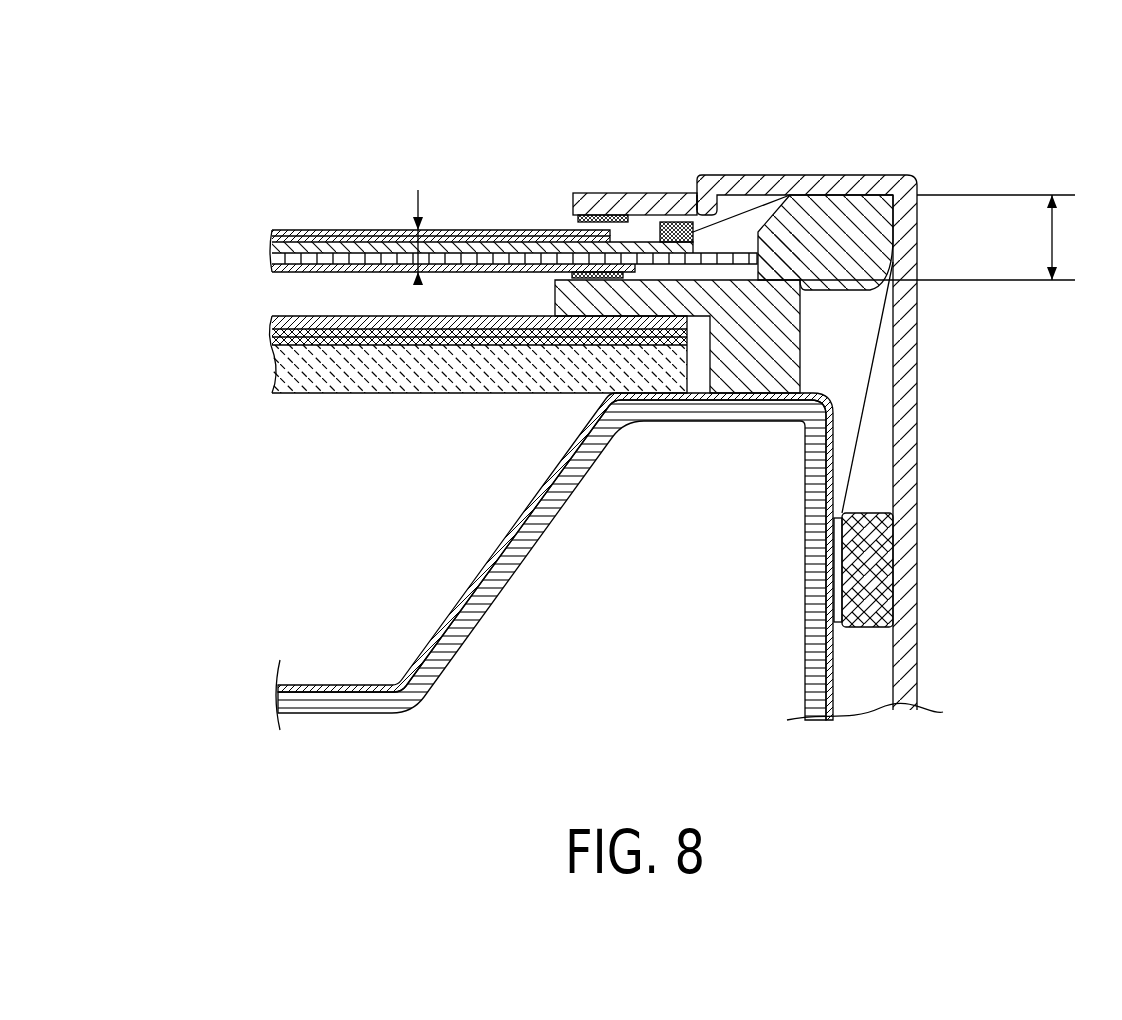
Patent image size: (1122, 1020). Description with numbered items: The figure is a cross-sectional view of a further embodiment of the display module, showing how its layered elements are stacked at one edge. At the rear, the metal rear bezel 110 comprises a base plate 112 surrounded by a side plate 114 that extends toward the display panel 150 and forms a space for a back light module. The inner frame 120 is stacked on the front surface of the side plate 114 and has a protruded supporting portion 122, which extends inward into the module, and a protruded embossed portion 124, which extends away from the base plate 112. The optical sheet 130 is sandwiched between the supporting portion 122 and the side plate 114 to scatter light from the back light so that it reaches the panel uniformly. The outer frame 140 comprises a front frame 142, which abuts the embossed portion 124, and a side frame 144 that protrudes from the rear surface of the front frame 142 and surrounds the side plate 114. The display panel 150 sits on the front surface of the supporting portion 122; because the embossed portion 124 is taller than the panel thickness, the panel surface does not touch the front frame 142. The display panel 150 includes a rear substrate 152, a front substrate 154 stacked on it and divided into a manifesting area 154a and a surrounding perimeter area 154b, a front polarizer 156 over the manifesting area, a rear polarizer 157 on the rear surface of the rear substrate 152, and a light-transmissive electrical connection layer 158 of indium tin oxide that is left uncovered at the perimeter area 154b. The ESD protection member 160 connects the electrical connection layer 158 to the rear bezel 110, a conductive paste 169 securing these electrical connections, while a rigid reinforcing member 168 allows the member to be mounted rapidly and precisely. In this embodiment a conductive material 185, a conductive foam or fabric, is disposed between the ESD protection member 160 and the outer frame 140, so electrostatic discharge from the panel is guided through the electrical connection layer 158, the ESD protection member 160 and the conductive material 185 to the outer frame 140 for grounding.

The rear bezel 110 is at (428, 632).
The base plate 112 is at (343, 703).
The side plate 114 is at (462, 628).
The inner frame 120 is at (789, 196).
The supporting portion 122 is at (638, 297).
The embossed portion 124 is at (795, 252).
The optical sheet 130 is at (262, 368).
The outer frame 140 is at (967, 84).
The front frame 142 is at (829, 228).
The side frame 144 is at (893, 262).
The display panel 150 is at (166, 85).
The rear substrate 152 is at (297, 262).
The front substrate 154 is at (317, 250).
The manifesting area 154a is at (476, 240).
The perimeter area 154b is at (614, 241).
The front polarizer 156 is at (390, 232).
The rear polarizer 157 is at (275, 268).
The electrical connection layer 158 is at (353, 238).
The ESD protection member 160 is at (872, 387).
The reinforcing member 168 is at (673, 224).
The conductive paste 169 is at (600, 193).
The conductive material 185 is at (892, 597).